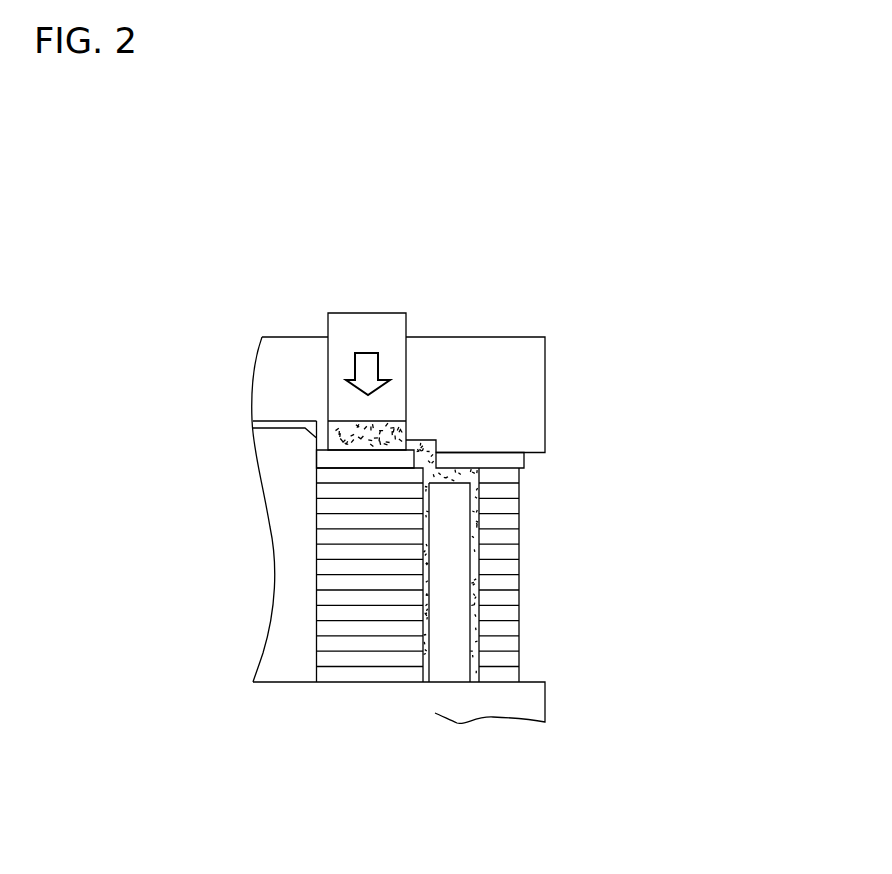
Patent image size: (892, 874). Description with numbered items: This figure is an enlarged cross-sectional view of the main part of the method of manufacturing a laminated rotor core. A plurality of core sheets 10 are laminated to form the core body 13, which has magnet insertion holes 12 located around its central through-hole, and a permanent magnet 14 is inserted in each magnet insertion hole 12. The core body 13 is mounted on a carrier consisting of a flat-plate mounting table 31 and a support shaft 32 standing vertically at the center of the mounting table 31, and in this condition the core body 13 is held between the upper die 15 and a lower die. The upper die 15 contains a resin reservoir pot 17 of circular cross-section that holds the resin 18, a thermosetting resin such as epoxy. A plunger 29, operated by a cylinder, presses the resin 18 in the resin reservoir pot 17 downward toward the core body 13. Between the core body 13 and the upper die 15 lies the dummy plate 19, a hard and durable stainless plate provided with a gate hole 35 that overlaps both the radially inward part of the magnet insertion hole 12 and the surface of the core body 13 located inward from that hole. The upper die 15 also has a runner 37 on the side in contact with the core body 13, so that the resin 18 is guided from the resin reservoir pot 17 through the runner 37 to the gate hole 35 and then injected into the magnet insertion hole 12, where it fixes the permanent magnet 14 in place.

The core sheets 10 is at (343, 675).
The magnet insertion hole 12 is at (478, 645).
The core body 13 is at (463, 618).
The permanent magnet 14 is at (452, 547).
The upper die 15 is at (528, 386).
The resin reservoir pot 17 is at (328, 446).
The resin 18 is at (365, 440).
The dummy plate 19 is at (513, 460).
The plunger 29 is at (392, 327).
The mounting table 31 is at (532, 702).
The support shaft 32 is at (297, 586).
The gate hole 35 is at (428, 440).
The runner 37 is at (420, 443).